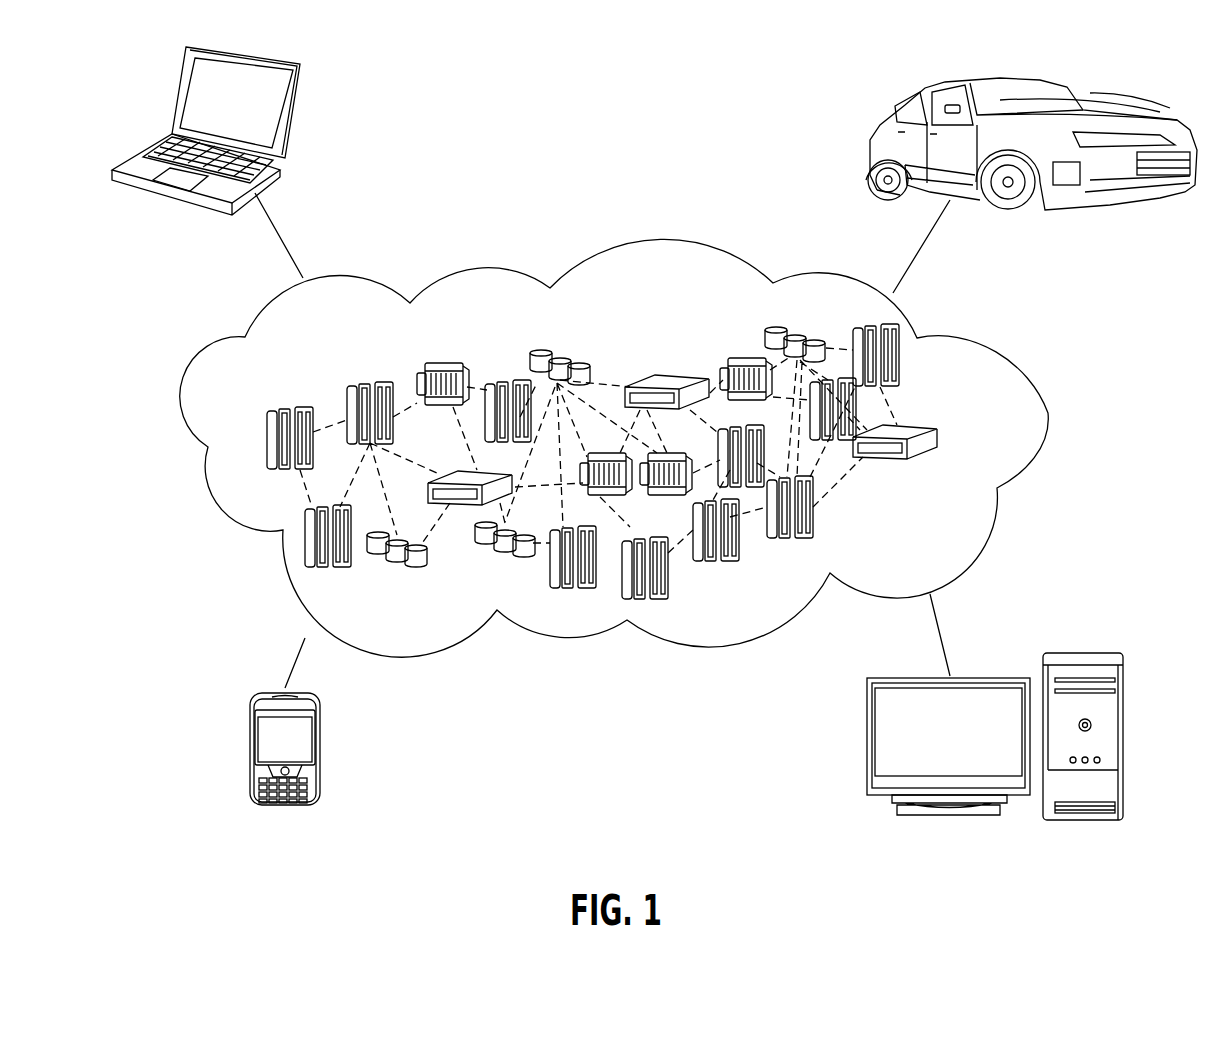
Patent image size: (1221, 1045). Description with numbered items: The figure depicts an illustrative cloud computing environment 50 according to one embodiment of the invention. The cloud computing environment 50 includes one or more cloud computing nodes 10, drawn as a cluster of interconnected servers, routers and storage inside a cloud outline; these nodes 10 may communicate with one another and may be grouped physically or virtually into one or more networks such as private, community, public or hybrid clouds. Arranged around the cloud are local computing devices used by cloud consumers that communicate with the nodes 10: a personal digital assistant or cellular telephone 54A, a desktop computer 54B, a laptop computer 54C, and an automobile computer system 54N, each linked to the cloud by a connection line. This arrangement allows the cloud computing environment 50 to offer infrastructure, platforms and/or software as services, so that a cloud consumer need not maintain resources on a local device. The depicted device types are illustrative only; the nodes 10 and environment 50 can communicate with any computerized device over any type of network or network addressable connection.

The cloud computing nodes 10 is at (980, 440).
The cloud computing environment 50 is at (1005, 352).
The personal digital assistant or cellular telephone 54A is at (248, 755).
The desktop computer 54B is at (1088, 652).
The laptop computer 54C is at (292, 118).
The automobile computer system 54N is at (875, 125).